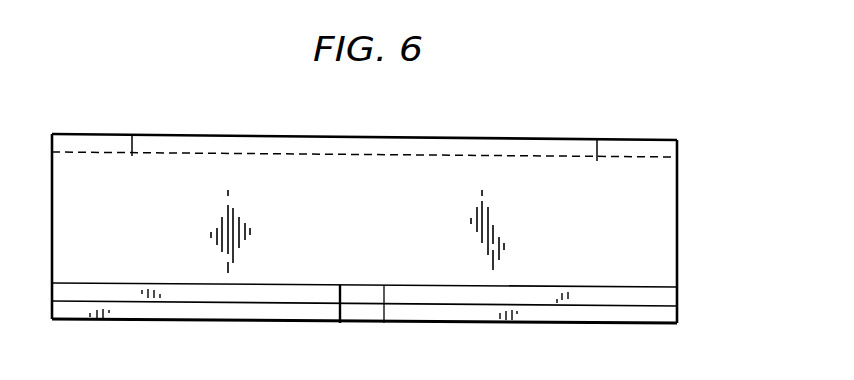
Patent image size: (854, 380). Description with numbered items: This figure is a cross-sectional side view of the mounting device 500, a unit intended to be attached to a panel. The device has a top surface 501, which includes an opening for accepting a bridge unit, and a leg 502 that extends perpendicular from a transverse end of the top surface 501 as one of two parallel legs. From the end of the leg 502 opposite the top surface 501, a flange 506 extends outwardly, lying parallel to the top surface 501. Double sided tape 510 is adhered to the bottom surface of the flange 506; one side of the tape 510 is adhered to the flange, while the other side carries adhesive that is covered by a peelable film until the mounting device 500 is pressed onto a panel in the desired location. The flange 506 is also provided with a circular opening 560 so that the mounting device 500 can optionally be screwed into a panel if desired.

The mounting device 500 is at (610, 140).
The top surface 501 is at (478, 138).
The leg 502 is at (663, 211).
The flange 506 is at (666, 298).
The double sided tape 510 is at (195, 310).
The circular opening 560 is at (360, 295).